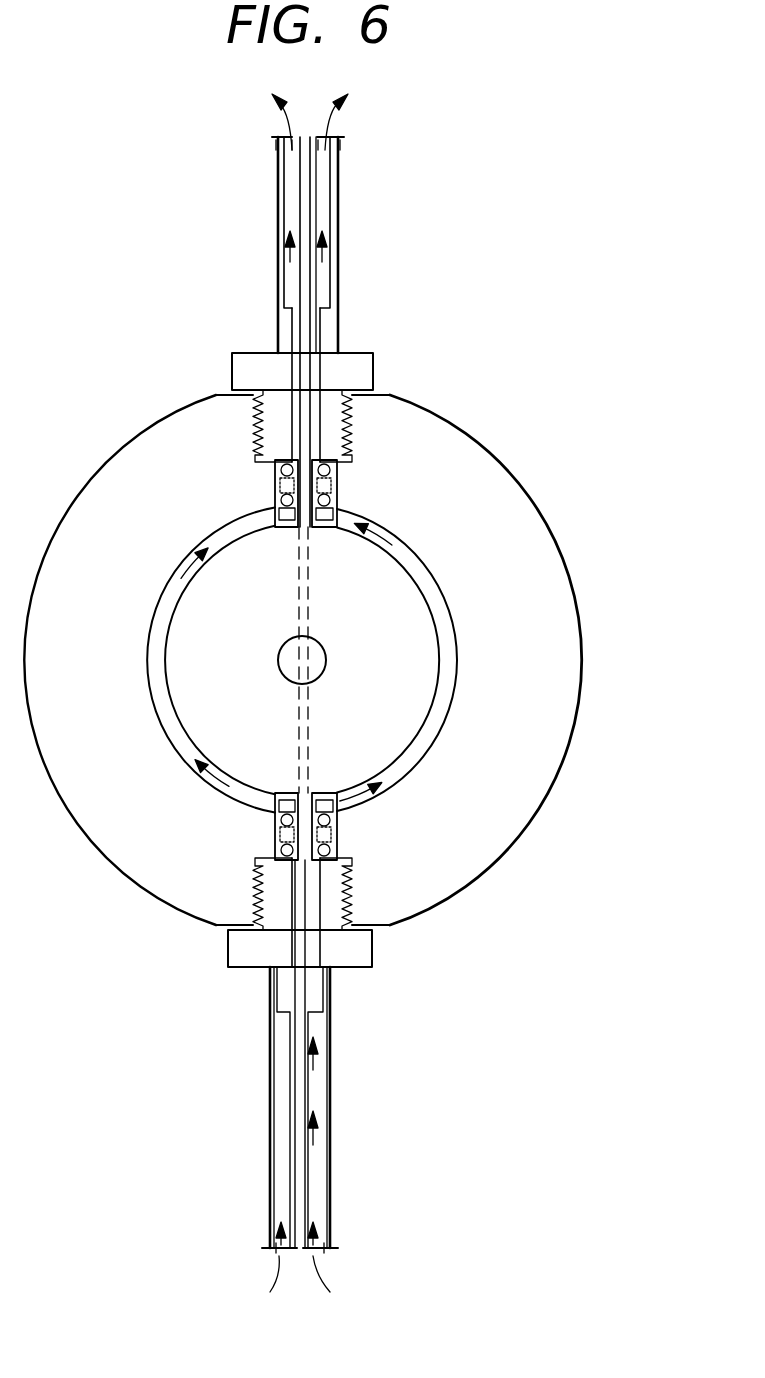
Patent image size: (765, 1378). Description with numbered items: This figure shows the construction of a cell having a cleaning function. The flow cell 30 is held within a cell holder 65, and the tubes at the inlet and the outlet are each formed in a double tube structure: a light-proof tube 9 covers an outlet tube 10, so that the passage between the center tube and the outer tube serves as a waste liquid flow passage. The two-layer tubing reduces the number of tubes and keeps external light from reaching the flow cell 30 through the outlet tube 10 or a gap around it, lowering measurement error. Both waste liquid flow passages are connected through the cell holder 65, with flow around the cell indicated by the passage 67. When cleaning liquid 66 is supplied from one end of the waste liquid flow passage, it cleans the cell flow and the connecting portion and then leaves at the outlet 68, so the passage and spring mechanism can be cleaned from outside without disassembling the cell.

The cell holder 65 is at (460, 893).
The annular coolant passage 67 is at (383, 528).
The flow cell 30 is at (412, 647).
The light-proof tube 9 is at (340, 268).
The outlet tube 10 is at (318, 222).
The outlet 68 is at (330, 131).
The cleaning liquid 66 is at (316, 1272).